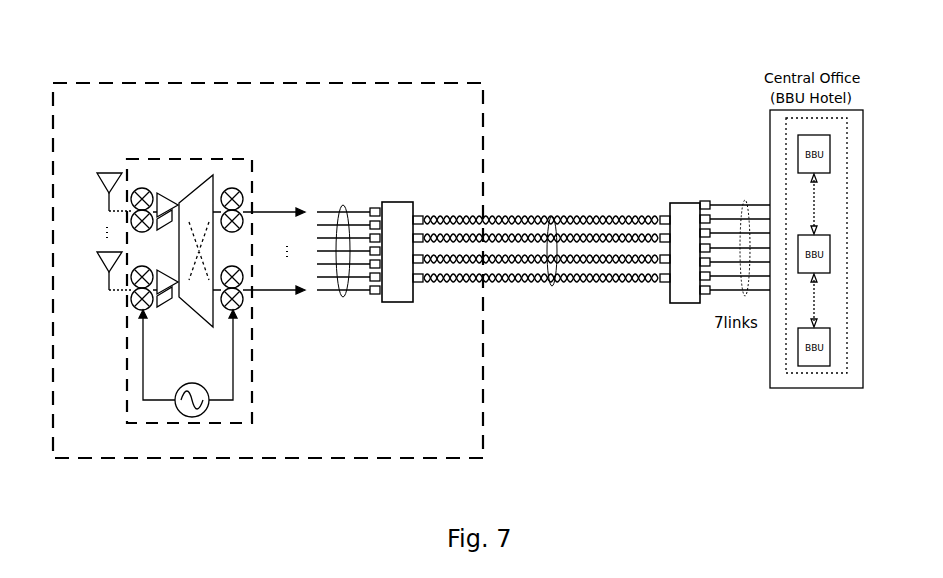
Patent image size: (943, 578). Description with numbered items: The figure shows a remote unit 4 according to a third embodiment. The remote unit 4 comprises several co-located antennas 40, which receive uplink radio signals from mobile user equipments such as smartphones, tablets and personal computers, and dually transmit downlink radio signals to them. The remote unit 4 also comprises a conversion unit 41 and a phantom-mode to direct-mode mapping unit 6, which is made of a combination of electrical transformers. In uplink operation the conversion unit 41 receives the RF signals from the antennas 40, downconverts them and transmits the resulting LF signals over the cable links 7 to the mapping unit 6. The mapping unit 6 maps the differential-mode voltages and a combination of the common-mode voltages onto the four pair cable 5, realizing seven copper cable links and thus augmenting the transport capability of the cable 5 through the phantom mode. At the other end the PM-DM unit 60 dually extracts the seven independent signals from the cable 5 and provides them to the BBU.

The remote unit 4 is at (330, 81).
The co-located antennas 40 is at (66, 169).
The conversion unit 41 is at (196, 160).
The cable links 7 is at (357, 196).
The phantom-mode to direct-mode mapping unit 6 is at (405, 202).
The four pair cable 5 is at (556, 202).
The PM-DM unit at the central office 60 is at (687, 207).